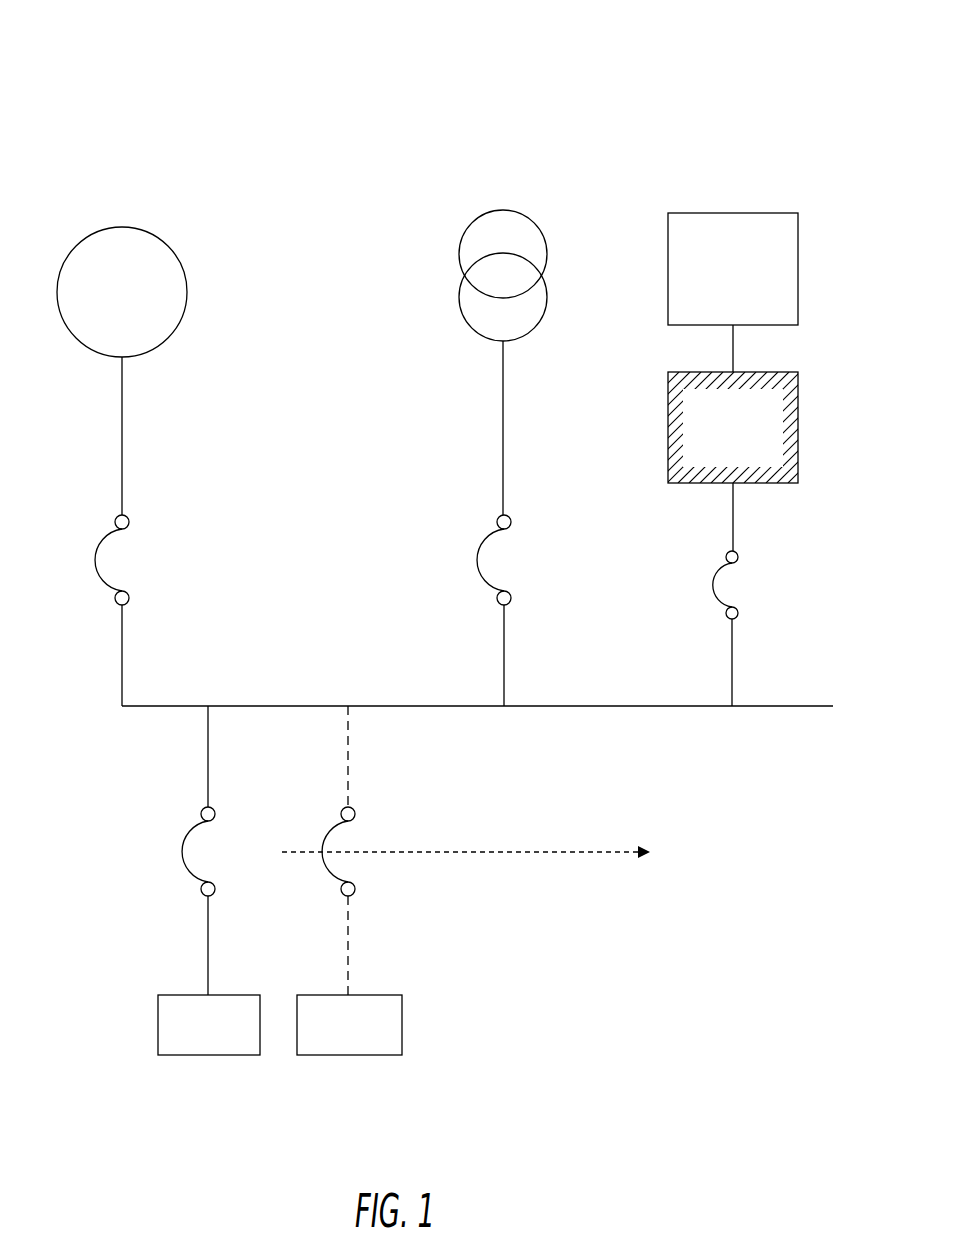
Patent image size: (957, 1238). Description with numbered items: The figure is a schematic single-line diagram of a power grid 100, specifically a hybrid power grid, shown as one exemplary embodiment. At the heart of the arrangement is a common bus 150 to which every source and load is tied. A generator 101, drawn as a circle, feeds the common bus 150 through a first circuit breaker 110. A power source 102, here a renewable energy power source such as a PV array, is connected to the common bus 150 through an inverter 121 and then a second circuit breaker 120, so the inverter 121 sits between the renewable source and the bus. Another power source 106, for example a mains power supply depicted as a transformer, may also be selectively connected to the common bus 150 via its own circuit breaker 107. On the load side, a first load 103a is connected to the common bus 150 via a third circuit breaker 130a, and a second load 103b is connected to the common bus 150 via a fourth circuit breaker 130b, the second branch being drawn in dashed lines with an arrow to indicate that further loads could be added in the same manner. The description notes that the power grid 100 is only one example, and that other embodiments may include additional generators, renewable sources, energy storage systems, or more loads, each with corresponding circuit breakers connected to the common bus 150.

The power grid 100 is at (757, 76).
The generator 101 is at (112, 227).
The first circuit breaker 110 is at (115, 517).
The power source 106 is at (497, 209).
The circuit breaker 107 is at (497, 517).
The power source 102 is at (798, 253).
The inverter 121 is at (798, 415).
The second circuit breaker 120 is at (738, 616).
The common bus 150 is at (780, 707).
The third circuit breaker 130a is at (202, 891).
The fourth circuit breaker 130b is at (355, 891).
The first load 103a is at (203, 1056).
The second load 103b is at (342, 1056).